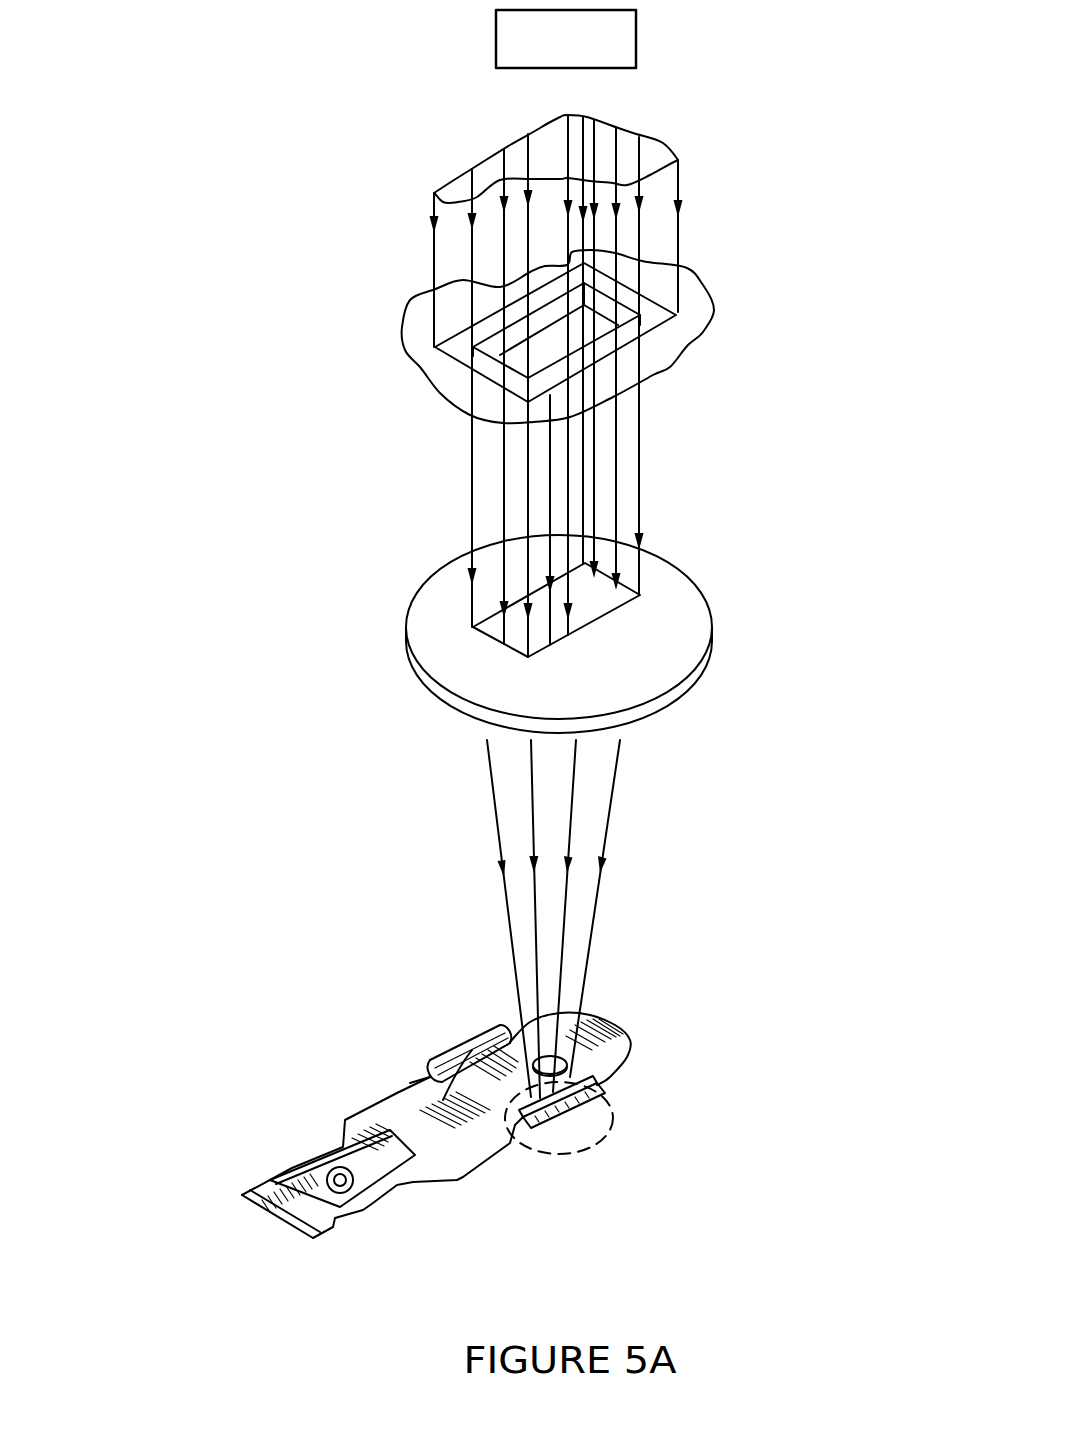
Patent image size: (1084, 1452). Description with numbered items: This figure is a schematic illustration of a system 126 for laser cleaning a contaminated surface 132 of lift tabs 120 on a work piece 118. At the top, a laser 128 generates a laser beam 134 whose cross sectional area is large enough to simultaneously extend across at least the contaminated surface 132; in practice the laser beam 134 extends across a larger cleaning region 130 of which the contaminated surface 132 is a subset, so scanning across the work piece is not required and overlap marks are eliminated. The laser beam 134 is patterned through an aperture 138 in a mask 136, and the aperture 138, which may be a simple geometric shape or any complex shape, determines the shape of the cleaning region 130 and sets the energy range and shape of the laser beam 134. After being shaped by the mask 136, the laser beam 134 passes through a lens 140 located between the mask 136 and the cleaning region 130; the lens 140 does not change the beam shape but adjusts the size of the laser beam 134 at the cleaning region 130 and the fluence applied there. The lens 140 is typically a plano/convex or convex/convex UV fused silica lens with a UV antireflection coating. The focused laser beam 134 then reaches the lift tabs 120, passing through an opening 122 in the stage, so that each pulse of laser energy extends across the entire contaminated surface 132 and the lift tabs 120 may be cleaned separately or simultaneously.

The sample stage 118 is at (266, 1176).
The lift tabs 120 is at (525, 1112).
The stage aperture hole 122 is at (518, 1072).
The system 126 is at (460, 157).
The laser 128 is at (566, 39).
The cleaning region 130 is at (562, 1143).
The contaminated surface 132 is at (580, 1110).
The laser beam 134 is at (645, 198).
The mask 136 is at (685, 333).
The aperture 138 is at (519, 354).
The lens 140 is at (670, 620).